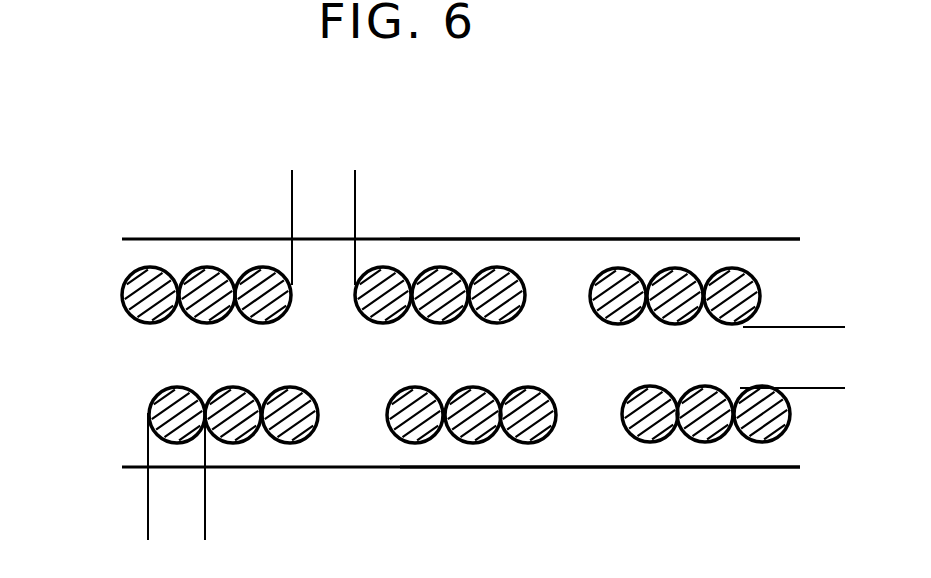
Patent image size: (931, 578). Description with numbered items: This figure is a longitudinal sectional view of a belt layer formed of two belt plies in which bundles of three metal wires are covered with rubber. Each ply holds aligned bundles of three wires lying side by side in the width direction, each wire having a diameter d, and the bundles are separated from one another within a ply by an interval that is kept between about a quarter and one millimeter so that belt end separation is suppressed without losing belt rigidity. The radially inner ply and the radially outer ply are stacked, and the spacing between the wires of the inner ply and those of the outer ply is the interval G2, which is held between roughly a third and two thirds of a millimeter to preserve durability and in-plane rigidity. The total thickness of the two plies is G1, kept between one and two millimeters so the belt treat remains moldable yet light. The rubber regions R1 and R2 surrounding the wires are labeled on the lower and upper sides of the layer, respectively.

The total thickness of the two plies G1 is at (108, 238).
The interval between the metal wires of the inner side ply and the outer side ply G2 is at (818, 283).
The diameter of the metal wire d is at (255, 510).
The lower resin region R1 is at (588, 433).
The upper resin region R2 is at (550, 277).